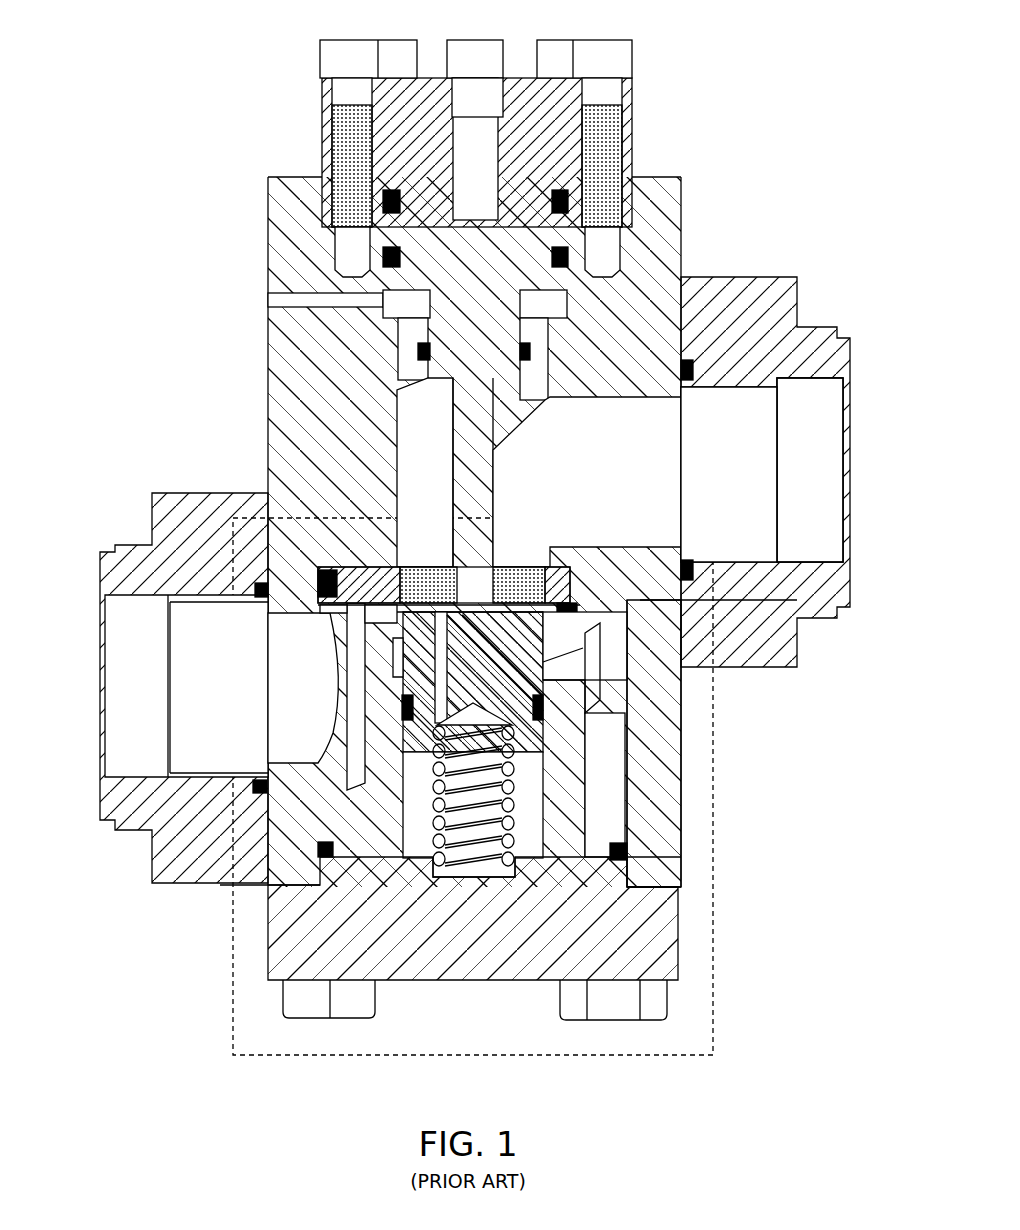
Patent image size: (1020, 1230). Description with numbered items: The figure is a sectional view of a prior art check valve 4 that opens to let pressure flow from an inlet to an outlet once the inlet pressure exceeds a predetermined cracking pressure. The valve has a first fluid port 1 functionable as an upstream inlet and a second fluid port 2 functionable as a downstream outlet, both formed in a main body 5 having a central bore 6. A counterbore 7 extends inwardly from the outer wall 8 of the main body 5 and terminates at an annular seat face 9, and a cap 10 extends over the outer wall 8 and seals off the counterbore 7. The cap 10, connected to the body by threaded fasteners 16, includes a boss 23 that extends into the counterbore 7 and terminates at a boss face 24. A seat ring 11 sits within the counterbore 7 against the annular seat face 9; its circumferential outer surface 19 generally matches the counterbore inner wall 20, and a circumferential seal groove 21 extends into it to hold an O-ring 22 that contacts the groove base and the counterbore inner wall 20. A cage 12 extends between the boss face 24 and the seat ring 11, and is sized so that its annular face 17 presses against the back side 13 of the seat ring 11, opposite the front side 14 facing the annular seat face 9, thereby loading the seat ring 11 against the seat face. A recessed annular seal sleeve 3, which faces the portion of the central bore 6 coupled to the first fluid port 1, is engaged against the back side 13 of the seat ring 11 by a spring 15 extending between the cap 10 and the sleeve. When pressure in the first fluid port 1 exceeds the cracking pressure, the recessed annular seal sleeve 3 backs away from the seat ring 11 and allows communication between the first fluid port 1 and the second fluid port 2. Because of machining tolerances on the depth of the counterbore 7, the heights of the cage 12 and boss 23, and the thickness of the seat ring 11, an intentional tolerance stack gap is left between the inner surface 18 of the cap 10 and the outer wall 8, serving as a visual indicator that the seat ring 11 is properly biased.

The first fluid port 1 is at (830, 442).
The second fluid port 2 is at (125, 708).
The recessed annular seal sleeve 3 is at (523, 672).
The check valve 4 is at (668, 90).
The main body 5 is at (655, 840).
The central bore 6 is at (608, 745).
The counterbore 7 is at (333, 782).
The outer wall 8 is at (630, 887).
The annular seat face 9 is at (403, 567).
The cap 10 is at (650, 953).
The seat ring 11 is at (353, 563).
The cage 12 is at (553, 870).
The back side 13 is at (343, 633).
The front side 14 is at (373, 565).
The spring 15 is at (473, 877).
The fasteners 16 is at (330, 1018).
The annular face 17 is at (600, 553).
The inner surface 18 is at (292, 895).
The circumferential outer surface 19 is at (717, 600).
The counterbore inner wall 20 is at (620, 680).
The circumferential seal groove 21 is at (335, 613).
The O-ring 22 is at (323, 577).
The boss 23 is at (620, 875).
The boss face 24 is at (610, 855).